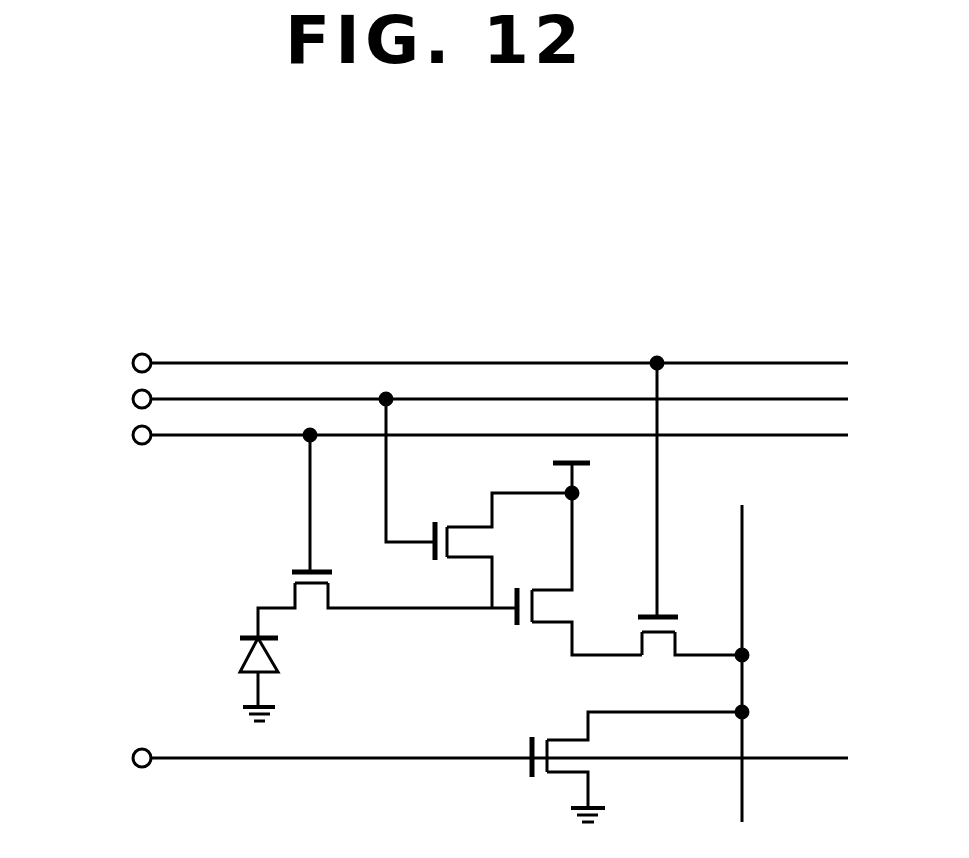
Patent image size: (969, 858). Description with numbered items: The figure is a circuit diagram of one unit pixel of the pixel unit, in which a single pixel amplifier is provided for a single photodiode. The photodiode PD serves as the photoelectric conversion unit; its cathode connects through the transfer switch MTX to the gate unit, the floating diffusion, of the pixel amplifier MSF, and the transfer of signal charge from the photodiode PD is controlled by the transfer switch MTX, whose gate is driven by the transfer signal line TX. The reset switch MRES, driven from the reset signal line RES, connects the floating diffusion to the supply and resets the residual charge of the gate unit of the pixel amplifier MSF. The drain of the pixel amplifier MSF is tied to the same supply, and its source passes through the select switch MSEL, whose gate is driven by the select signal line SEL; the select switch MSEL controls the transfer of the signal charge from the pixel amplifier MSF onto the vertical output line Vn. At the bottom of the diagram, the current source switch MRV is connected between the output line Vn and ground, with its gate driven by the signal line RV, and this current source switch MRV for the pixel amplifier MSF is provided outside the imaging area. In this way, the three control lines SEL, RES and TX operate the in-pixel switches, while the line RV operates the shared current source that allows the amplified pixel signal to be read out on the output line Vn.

The select signal line φ SEL is at (444, 366).
The reset signal line φ RES is at (442, 402).
The transfer signal line φ TX is at (453, 438).
The current source signal line φ RV is at (453, 761).
The transfer switch MTX is at (361, 536).
The photodiode PD is at (231, 679).
The reset switch MRES is at (488, 503).
The pixel amplifier MSF is at (569, 631).
The select switch MSEL is at (682, 532).
The current source switch MRV is at (597, 767).
The output line Vn is at (747, 681).